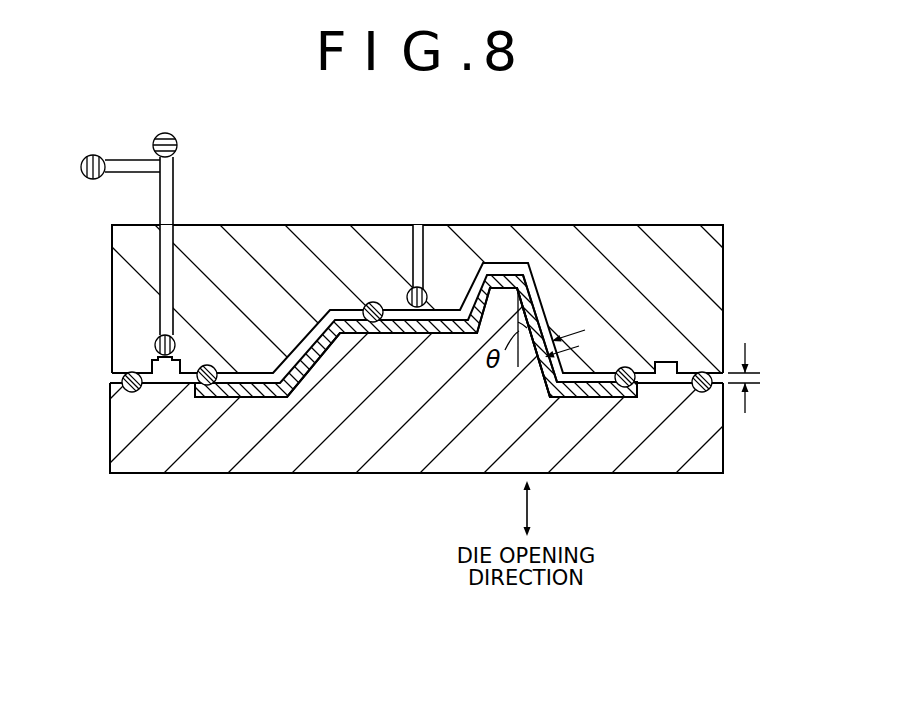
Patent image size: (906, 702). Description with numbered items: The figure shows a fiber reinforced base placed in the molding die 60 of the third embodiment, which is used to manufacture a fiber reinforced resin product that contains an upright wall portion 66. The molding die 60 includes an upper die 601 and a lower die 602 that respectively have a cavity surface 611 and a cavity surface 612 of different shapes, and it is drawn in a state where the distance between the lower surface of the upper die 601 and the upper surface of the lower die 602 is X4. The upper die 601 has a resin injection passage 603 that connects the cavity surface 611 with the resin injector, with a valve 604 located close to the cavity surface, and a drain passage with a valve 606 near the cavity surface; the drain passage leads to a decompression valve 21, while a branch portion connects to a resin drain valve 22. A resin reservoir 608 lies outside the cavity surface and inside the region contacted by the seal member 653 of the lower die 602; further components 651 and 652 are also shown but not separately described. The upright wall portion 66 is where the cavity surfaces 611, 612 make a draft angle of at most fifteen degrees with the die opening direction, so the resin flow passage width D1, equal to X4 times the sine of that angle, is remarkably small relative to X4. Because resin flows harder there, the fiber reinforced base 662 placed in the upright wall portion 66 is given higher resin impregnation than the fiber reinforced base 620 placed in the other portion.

The molding die 60 is at (686, 159).
The upper die 601 is at (612, 240).
The lower die 602 is at (634, 462).
The resin injection passage 603 is at (418, 213).
The valve 604 is at (436, 293).
The valve 606 is at (149, 334).
The resin reservoir 608 is at (667, 367).
The cavity surface 611 is at (409, 292).
The cavity surface 612 is at (387, 335).
The fiber reinforced base 620 is at (253, 399).
The pin 651 is at (371, 302).
The pin 652 is at (208, 365).
The seal member 653 is at (131, 393).
The upright wall portion 66 is at (543, 292).
The fiber reinforced base 662 is at (547, 392).
The decompression valve 21 is at (168, 133).
The resin drain valve 22 is at (84, 158).
The distance between lower surface of upper die and upper surface of lower die X4 is at (745, 395).
The distance perpendicular to the cavity surfaces at the upright wall portion D1 is at (567, 333).